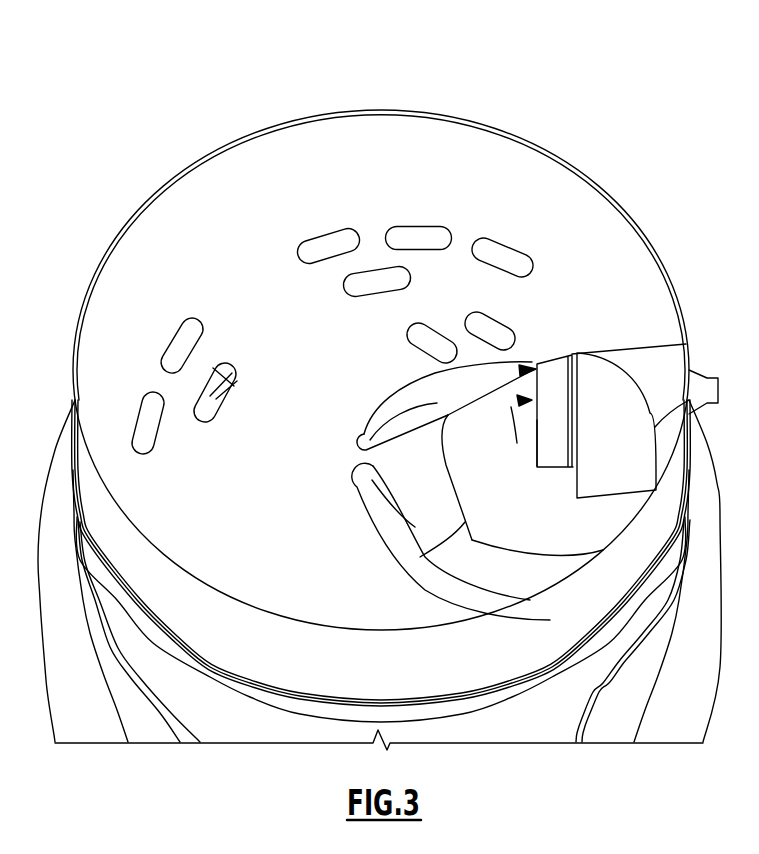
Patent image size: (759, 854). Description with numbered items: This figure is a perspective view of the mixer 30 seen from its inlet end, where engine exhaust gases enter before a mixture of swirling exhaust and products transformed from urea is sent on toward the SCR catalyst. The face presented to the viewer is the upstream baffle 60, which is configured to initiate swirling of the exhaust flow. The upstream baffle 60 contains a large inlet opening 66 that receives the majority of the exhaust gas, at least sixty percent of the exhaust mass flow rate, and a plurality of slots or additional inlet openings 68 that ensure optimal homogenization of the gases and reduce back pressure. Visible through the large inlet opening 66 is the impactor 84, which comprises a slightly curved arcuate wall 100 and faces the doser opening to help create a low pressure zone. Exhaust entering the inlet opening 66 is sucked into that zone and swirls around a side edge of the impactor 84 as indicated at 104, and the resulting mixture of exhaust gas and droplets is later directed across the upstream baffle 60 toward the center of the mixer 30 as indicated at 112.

The mixer 30 is at (222, 108).
The upstream baffle 60 is at (423, 213).
The large inlet opening 66 is at (421, 557).
The additional inlet openings 68 is at (205, 400).
The impactor 84 is at (556, 405).
The arcuate wall 100 is at (537, 418).
The arrow 104 is at (510, 405).
The arrow 112 is at (540, 363).